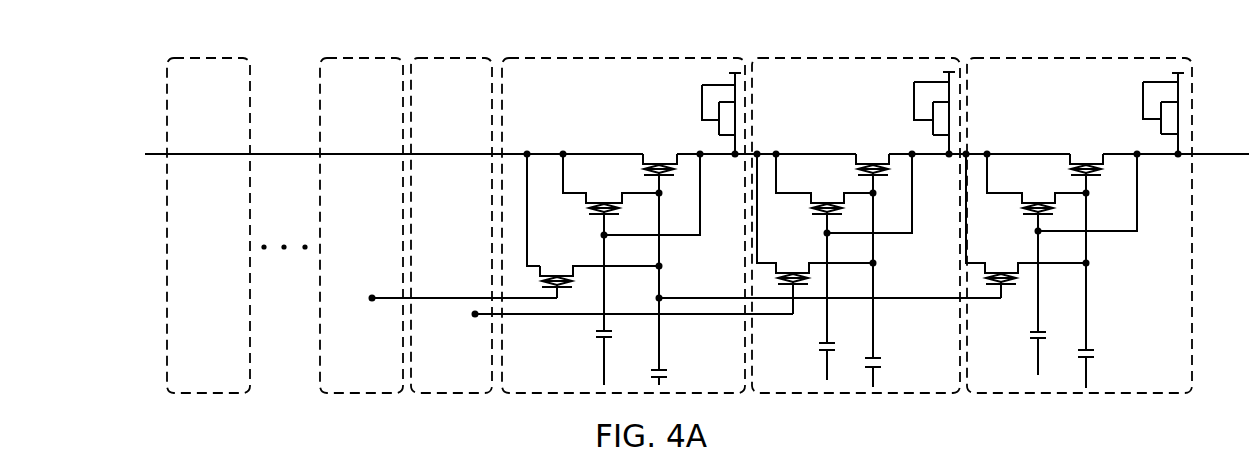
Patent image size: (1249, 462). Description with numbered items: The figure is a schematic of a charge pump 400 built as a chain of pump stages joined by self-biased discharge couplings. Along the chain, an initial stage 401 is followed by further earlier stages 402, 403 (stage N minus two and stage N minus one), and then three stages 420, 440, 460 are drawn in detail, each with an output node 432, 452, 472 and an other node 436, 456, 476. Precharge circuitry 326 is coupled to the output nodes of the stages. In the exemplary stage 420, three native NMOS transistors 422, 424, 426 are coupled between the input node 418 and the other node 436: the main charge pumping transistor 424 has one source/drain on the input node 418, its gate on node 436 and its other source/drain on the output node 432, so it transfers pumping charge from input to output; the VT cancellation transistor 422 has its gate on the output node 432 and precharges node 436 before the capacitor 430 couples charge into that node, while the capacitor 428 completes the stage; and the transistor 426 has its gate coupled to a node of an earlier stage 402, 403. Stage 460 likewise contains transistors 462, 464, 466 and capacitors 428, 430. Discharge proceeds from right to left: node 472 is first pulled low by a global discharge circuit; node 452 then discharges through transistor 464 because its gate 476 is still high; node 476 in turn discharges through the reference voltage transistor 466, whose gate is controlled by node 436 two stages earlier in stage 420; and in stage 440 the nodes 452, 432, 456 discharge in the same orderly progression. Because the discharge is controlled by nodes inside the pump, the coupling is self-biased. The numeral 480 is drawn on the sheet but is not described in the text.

The charge pump 400 is at (85, 57).
The control signal lines 480 is at (85, 447).
The initial stage 401 is at (227, 89).
The stage N-2 402 is at (382, 89).
The stage N-1 403 is at (468, 88).
The pump stage 420 is at (557, 88).
The pump stage 440 is at (802, 86).
The pump stage 460 is at (1013, 86).
The precharge circuitry 326 is at (695, 99).
The input node 418 is at (525, 197).
The VT cancellation transistor 422 is at (606, 202).
The main charge pumping transistor 424 is at (657, 150).
The transistor 426 is at (558, 272).
The capacitor 428 is at (598, 335).
The capacitor 430 is at (670, 372).
The output node 432 is at (659, 183).
The other node 436 is at (680, 280).
The output node 452 is at (877, 182).
The other node 456 is at (894, 264).
The transistor 462 is at (1038, 200).
The transistor 464 is at (1086, 162).
The reference voltage transistor 466 is at (1000, 268).
The output node 472 is at (1095, 181).
The other node 476 is at (1106, 264).